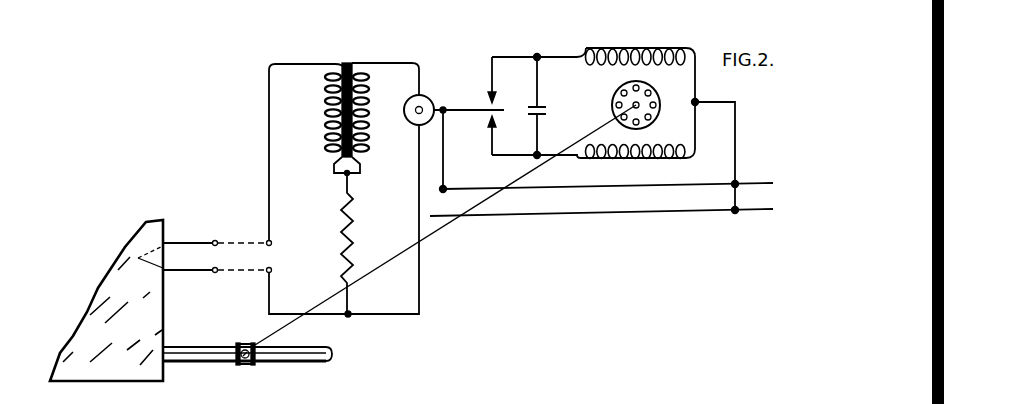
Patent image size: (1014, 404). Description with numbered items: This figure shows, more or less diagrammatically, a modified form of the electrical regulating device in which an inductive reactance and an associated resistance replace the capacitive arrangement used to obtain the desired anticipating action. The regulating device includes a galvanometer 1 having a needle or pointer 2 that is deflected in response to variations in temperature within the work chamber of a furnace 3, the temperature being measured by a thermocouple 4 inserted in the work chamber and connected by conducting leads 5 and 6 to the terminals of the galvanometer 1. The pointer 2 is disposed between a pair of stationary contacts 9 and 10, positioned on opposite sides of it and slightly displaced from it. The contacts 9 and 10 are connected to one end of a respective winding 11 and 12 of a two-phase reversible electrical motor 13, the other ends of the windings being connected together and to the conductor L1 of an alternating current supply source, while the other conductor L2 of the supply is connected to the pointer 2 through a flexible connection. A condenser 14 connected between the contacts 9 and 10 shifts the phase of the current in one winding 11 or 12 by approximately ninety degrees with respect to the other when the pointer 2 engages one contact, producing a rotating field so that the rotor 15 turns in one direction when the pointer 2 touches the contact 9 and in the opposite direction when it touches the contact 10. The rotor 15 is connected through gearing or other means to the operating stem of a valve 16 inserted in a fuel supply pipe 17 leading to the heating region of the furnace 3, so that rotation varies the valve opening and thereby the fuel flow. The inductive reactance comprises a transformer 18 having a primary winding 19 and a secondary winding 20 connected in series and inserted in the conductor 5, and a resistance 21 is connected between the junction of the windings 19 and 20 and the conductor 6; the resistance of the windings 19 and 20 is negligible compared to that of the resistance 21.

The galvanometer 1 is at (424, 94).
The pointer 2 is at (457, 110).
The furnace 3 is at (160, 337).
The thermocouple 4 is at (137, 250).
The conducting lead 5 is at (176, 243).
The conducting lead 6 is at (207, 271).
The stationary contact 9 is at (496, 101).
The stationary contact 10 is at (495, 117).
The winding 11 is at (628, 48).
The winding 12 is at (645, 159).
The two-phase reversible electrical motor 13 is at (609, 93).
The condenser 14 is at (556, 106).
The rotor 15 is at (656, 99).
The valve 16 is at (243, 343).
The fuel supply pipe 17 is at (299, 356).
The transformer 18 is at (347, 64).
The primary winding 19 is at (324, 130).
The secondary winding 20 is at (366, 98).
The resistance 21 is at (343, 234).
The conductor of alternating current supply source L1 is at (549, 216).
The conductor of alternating current supply source L2 is at (541, 189).